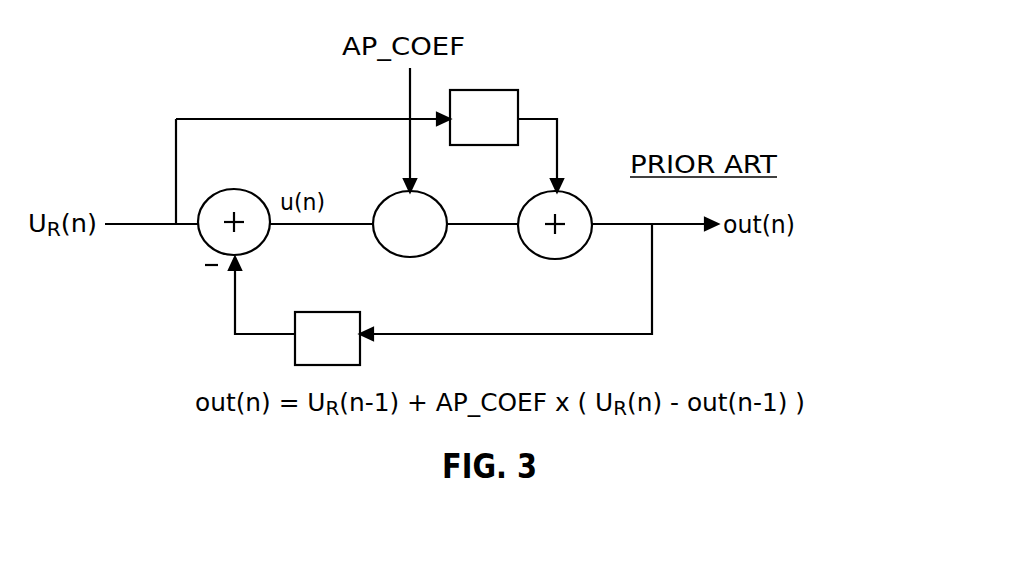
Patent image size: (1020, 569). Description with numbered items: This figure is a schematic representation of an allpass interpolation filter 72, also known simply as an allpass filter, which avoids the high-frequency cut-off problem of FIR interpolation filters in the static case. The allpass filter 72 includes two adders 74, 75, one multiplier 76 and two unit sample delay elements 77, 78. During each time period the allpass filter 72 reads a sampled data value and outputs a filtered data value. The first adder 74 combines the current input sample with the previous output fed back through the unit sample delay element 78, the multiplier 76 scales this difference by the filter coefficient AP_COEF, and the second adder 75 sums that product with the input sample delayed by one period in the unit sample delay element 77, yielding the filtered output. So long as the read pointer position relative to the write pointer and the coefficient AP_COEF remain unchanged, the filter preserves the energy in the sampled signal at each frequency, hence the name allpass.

The allpass interpolation filter 72 is at (166, 98).
The adder 74 is at (265, 237).
The adder 75 is at (586, 243).
The multiplier 76 is at (441, 242).
The unit sample delay element 77 is at (518, 104).
The unit sample delay element 78 is at (360, 352).